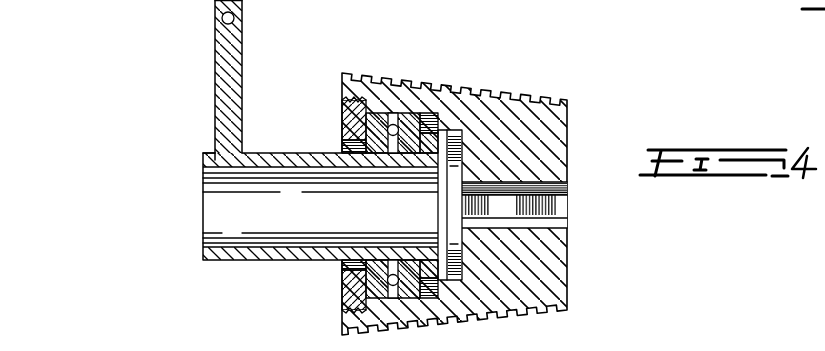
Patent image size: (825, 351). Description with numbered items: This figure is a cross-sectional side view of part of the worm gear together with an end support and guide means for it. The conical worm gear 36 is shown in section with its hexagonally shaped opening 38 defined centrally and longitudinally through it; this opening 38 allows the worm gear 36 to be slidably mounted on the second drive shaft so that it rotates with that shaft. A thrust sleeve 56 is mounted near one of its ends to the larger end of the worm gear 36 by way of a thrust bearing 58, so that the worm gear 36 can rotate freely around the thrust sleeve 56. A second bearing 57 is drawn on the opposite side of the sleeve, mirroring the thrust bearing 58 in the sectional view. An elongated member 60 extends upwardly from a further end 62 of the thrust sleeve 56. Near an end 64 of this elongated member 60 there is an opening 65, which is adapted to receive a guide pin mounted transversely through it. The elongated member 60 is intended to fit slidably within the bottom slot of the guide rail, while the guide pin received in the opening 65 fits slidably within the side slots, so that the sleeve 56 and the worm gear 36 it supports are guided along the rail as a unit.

The conical worm gear 36 is at (517, 93).
The hexagonally shaped opening 38 is at (567, 209).
The thrust sleeve 56 is at (268, 152).
The lower roller bearing 57 is at (372, 272).
The thrust bearing 58 is at (412, 125).
The elongated member 60 is at (214, 89).
The further end 62 is at (217, 157).
The end 64 is at (222, 15).
The opening 65 is at (235, 18).